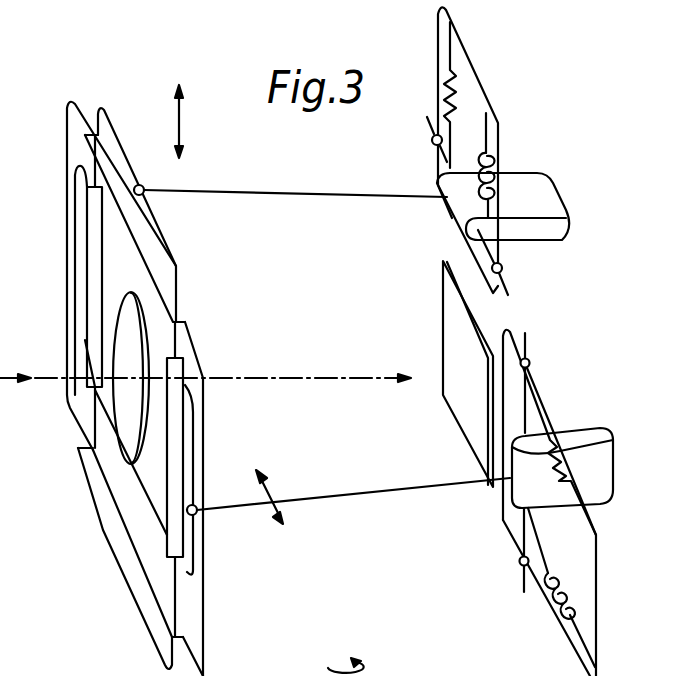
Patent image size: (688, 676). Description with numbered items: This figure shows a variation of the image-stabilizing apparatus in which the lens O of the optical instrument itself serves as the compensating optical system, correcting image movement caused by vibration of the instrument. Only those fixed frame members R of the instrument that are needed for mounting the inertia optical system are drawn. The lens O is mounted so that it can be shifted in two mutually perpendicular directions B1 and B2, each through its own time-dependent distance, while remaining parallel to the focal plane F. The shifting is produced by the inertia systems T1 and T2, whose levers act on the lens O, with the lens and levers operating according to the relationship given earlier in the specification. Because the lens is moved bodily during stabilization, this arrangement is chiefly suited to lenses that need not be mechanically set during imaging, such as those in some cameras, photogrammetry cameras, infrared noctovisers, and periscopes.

The first shift direction B1 is at (140, 386).
The second shift direction B2 is at (137, 388).
The lens O is at (125, 357).
The frame members R is at (203, 617).
The focal plane F is at (452, 325).
The first inertia system T1 is at (560, 490).
The second inertia system T2 is at (517, 183).